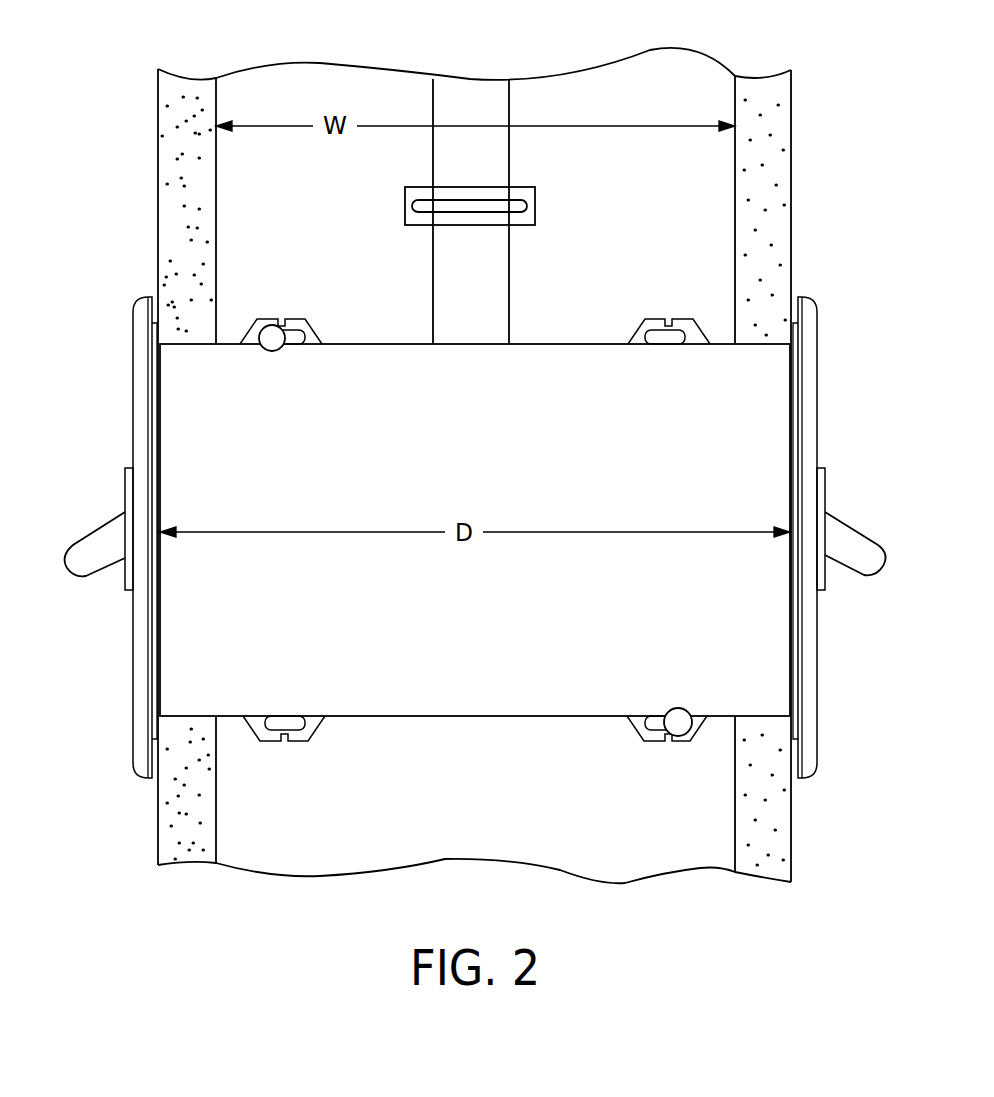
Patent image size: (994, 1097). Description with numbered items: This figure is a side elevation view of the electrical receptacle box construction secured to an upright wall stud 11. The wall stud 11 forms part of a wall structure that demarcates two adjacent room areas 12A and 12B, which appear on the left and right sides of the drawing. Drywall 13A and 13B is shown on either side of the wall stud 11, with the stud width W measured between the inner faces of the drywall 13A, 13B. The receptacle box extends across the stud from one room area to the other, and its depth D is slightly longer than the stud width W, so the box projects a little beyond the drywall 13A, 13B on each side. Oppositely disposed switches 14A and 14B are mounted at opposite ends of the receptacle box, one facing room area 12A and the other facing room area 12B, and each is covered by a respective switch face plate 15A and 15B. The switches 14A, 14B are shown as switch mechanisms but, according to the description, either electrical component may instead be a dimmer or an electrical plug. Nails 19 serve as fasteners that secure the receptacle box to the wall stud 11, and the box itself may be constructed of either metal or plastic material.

The wall stud 11 is at (642, 228).
The room area 12A is at (128, 197).
The room area 12B is at (870, 197).
The drywall 13A is at (184, 95).
The drywall 13B is at (757, 95).
The switch 14A is at (105, 535).
The switch 14B is at (845, 535).
The switch face plate 15A is at (140, 414).
The switch face plate 15B is at (812, 414).
The nail 19 is at (267, 327).